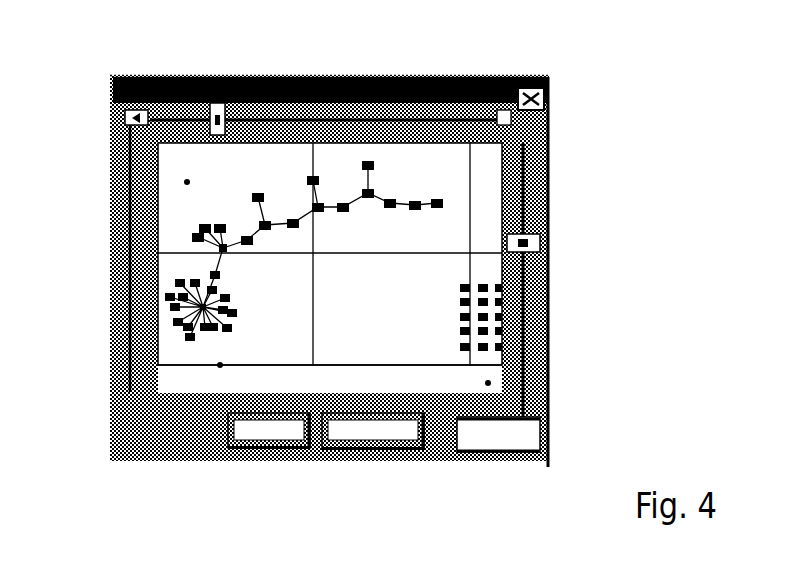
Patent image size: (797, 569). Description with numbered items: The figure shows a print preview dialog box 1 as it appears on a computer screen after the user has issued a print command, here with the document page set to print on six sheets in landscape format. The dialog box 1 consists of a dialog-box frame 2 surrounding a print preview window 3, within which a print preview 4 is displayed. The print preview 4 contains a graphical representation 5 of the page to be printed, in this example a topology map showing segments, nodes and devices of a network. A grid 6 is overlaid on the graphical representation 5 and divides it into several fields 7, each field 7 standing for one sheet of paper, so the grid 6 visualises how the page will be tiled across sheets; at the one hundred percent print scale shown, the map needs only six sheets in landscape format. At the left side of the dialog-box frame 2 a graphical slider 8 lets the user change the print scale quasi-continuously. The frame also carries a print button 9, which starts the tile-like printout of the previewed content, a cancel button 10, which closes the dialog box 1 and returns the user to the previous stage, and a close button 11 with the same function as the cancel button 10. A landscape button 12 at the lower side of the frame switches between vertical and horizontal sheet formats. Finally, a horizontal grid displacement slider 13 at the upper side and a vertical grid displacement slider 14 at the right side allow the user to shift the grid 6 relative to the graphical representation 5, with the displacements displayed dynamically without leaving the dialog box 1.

The dialog box 1 is at (587, 160).
The dialog-box frame 2 is at (510, 320).
The print preview window 3 is at (492, 383).
The print preview 4 is at (187, 368).
The graphical representation 5 is at (180, 258).
The grid 6 is at (220, 365).
The field 7 is at (185, 182).
The graphical slider 8 is at (125, 118).
The print button 9 is at (237, 470).
The cancel button 10 is at (333, 472).
The close button 11 is at (545, 95).
The landscape button 12 is at (470, 462).
The horizontal grid displacement slider 13 is at (205, 77).
The vertical grid displacement slider 14 is at (543, 245).